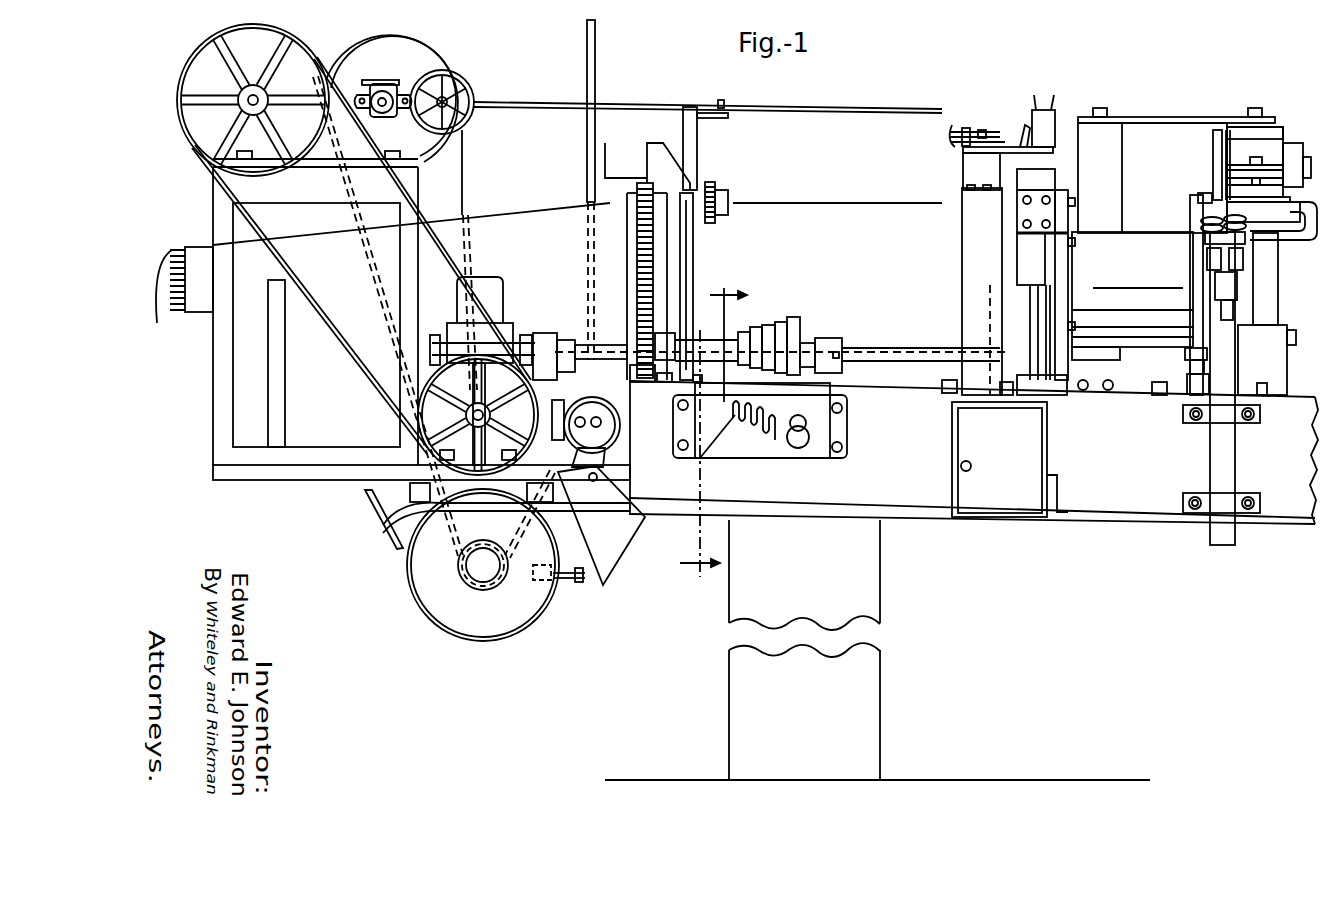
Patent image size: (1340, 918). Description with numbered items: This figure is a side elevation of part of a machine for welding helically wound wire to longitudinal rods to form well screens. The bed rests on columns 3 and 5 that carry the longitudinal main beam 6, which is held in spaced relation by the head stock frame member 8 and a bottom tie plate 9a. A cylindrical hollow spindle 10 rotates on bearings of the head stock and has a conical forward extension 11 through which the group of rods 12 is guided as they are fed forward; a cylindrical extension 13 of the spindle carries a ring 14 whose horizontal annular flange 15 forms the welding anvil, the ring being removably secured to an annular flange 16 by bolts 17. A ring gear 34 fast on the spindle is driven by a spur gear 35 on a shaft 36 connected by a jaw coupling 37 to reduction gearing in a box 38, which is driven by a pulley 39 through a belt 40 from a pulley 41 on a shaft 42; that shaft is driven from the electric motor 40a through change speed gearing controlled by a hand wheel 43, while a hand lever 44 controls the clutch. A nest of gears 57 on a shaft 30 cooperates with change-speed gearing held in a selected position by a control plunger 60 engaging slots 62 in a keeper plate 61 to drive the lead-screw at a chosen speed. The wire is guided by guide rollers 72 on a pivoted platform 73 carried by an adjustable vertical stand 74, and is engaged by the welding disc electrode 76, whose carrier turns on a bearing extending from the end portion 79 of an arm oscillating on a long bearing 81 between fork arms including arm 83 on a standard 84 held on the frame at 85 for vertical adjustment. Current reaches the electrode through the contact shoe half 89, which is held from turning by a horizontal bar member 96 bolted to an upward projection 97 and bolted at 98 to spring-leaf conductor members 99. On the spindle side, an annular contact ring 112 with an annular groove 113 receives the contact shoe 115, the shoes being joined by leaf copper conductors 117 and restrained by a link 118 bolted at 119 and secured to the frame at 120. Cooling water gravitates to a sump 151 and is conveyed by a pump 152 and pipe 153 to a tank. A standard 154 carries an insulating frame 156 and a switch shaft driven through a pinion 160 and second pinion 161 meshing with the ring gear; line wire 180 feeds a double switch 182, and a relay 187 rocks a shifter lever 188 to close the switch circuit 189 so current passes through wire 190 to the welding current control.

The column 3 is at (880, 586).
The column 5 is at (720, 432).
The longitudinal main beam 6 is at (1122, 523).
The head stock frame member 8 is at (693, 250).
The bottom tie plate 9a is at (1013, 522).
The cylindrical hollow spindle 10 is at (802, 212).
The conical forward extension 11 is at (303, 240).
The rods 12 is at (172, 306).
The cylindrical extension 13 is at (1131, 242).
The ring 14 is at (1195, 380).
The annular flange 15 is at (1197, 403).
The annular flange 16 is at (1192, 366).
The bolts 17 is at (1185, 352).
The shaft 30 is at (893, 353).
The ring gear 34 is at (627, 250).
The spur gear 35 is at (636, 373).
The shaft 36 is at (612, 340).
The jaw coupling 37 is at (545, 333).
The box 38 is at (493, 290).
The pulley 39 is at (420, 397).
The belt 40 is at (368, 372).
The electric motor 40a is at (492, 627).
The pulley 41 is at (248, 172).
The shaft 42 is at (248, 106).
The hand wheel 43 is at (455, 88).
The hand lever 44 is at (645, 108).
The nest of gears 57 is at (790, 330).
The control plunger 60 is at (803, 448).
The keeper plate 61 is at (820, 427).
The slots 62 is at (772, 445).
The guide rollers 72 is at (1240, 228).
The pivoted platform 73 is at (1210, 228).
The adjustable vertical stand 74 is at (1235, 363).
The welding disc electrode 76 is at (1213, 145).
The end portion of arm 79 is at (1296, 156).
The long bearing 81 is at (1262, 232).
The fork arm 83 is at (1311, 180).
The standard 84 is at (1270, 310).
The frame mounting 85 is at (1287, 372).
The contact shoe half 89 is at (1268, 152).
The horizontal bar member 96 is at (1128, 117).
The upward projection 97 is at (1272, 130).
The bolt connection 98 is at (1100, 108).
The spring-leaf conductor members 99 is at (1115, 148).
The annular contact ring 112 is at (1025, 295).
The annular groove 113 is at (1035, 312).
The contact shoe 115 is at (1030, 257).
The leaf copper conductors 117 is at (1030, 178).
The link 118 is at (1062, 270).
The bolt connection 119 is at (1030, 226).
The frame attachment 120 is at (1058, 388).
The sump 151 is at (612, 558).
The pump 152 is at (565, 403).
The pipe 153 is at (587, 145).
The standard 154 is at (663, 155).
The frame 156 is at (605, 170).
The pinion 160 is at (710, 185).
The second pinion 161 is at (637, 213).
The wire 180 is at (952, 147).
The double switch 182 is at (963, 166).
The relay 187 is at (1050, 122).
The shifter lever 188 is at (1020, 138).
The switch circuit 189 is at (981, 131).
The wire 190 is at (953, 125).